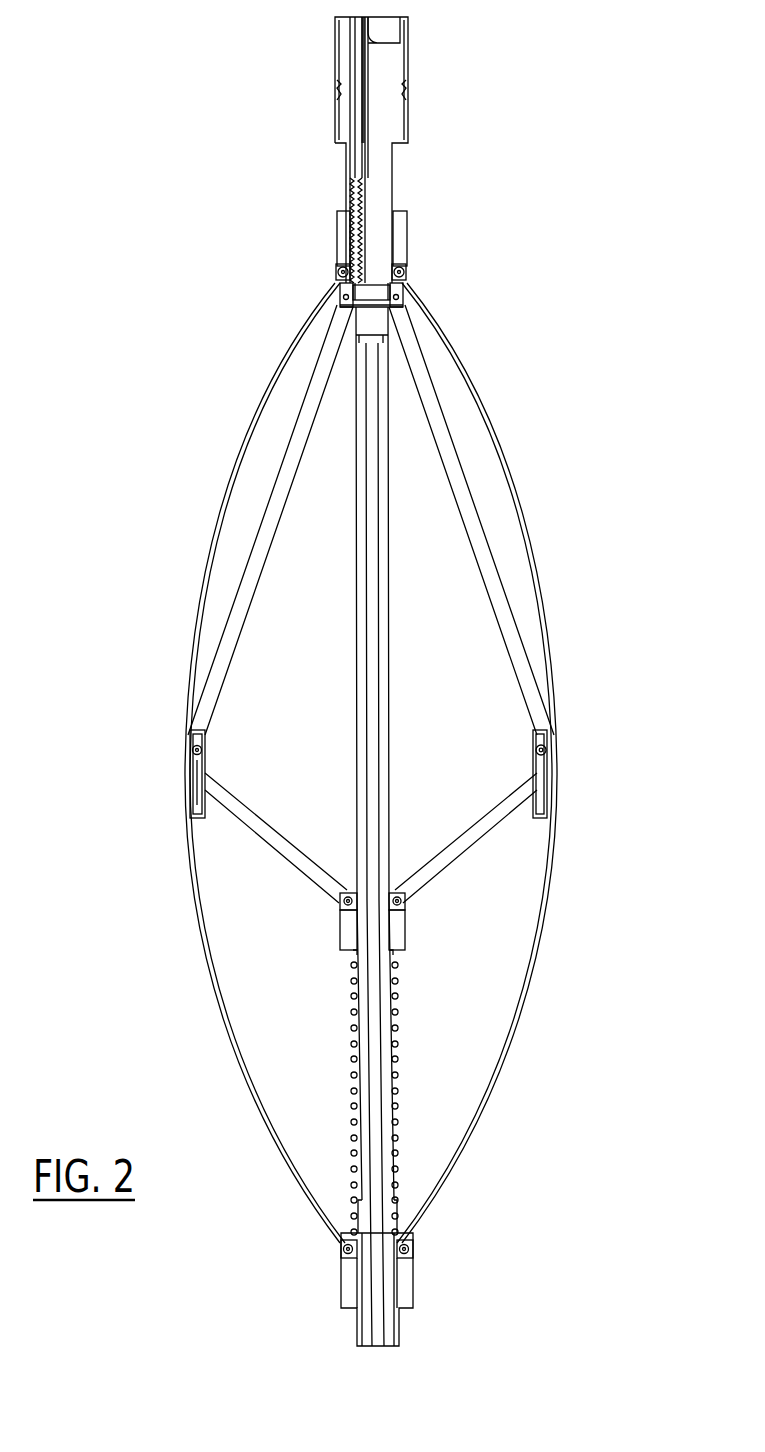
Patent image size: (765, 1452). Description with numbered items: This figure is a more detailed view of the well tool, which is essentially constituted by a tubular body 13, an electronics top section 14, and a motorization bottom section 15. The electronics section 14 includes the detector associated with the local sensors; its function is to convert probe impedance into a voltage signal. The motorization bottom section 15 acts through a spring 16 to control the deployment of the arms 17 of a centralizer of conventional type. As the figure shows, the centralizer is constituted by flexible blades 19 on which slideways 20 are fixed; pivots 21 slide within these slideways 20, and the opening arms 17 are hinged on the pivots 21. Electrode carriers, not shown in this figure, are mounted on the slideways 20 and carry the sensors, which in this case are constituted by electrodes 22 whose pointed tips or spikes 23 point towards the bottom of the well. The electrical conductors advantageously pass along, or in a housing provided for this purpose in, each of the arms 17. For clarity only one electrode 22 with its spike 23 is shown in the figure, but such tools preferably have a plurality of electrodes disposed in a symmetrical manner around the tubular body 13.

The tubular body 13 is at (389, 648).
The electronics top section 14 is at (380, 181).
The motorization bottom section 15 is at (390, 1277).
The spring 16 is at (354, 1027).
The arms 17 is at (455, 848).
The flexible blades 19 is at (527, 978).
The slideways 20 is at (544, 786).
The pivots 21 is at (549, 745).
The electrodes 22 is at (208, 757).
The spikes 23 is at (203, 800).